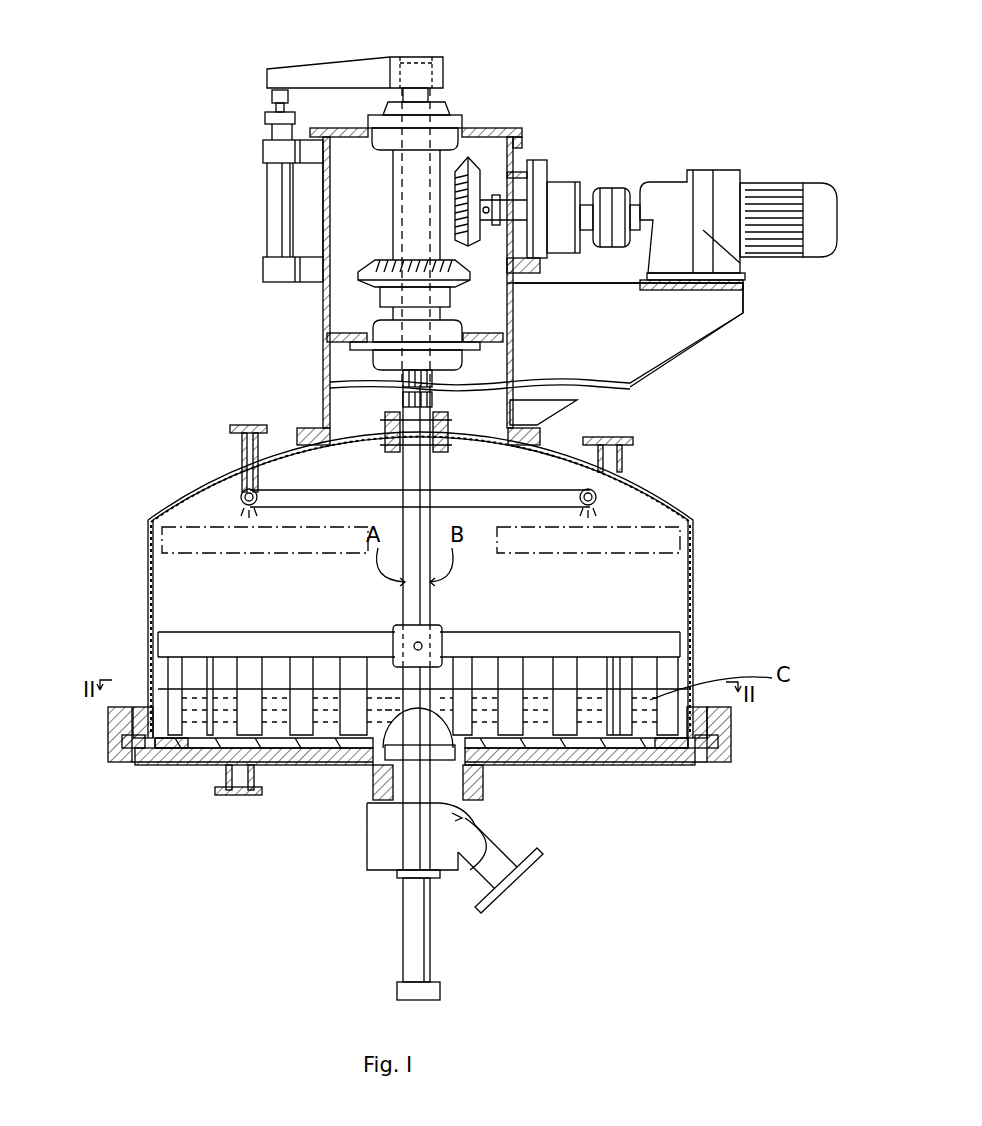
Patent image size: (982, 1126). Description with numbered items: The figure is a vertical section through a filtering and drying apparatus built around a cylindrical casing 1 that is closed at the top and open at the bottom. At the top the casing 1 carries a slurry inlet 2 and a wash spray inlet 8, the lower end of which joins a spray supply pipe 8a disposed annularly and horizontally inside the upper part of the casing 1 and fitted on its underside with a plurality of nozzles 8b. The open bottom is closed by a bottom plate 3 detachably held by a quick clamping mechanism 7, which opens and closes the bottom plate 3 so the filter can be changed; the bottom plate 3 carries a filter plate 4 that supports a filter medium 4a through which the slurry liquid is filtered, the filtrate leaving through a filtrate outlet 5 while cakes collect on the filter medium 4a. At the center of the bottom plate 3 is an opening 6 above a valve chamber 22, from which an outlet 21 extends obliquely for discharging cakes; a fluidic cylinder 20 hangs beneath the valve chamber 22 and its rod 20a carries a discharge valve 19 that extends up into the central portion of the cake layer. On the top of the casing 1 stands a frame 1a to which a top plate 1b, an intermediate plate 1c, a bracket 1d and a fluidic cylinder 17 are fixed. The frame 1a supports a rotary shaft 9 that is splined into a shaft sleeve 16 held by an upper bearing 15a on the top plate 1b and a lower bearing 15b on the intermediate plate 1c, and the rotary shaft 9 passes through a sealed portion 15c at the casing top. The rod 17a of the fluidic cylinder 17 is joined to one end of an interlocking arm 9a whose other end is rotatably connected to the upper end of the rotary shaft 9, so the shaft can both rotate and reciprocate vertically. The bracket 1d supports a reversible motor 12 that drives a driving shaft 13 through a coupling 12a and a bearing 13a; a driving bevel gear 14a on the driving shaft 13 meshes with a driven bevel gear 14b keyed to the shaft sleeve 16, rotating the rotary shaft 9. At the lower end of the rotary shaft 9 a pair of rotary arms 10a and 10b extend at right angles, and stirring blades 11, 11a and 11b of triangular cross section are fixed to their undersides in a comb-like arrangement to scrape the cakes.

The cylindrical casing 1 is at (693, 560).
The frame 1a is at (327, 345).
The top plate 1b is at (495, 130).
The intermediate plate 1c is at (327, 337).
The bracket 1d is at (705, 330).
The slurry inlet 2 is at (633, 440).
The bottom plate 3 is at (690, 760).
The filter plate 4 is at (645, 765).
The filter medium 4a is at (622, 765).
The filtrate outlet 5 is at (233, 797).
The opening 6 is at (400, 805).
The quick clamping mechanism 7 is at (118, 738).
The wash spray inlet 8 is at (243, 425).
The spray supply pipe 8a is at (352, 490).
The nozzles 8b is at (240, 505).
The rotary shaft 9 is at (432, 583).
The interlocking arm 9a is at (352, 65).
The rotary arm 10a is at (690, 509).
The rotary arm 10b is at (170, 523).
The stirring blade 11 is at (200, 765).
The stirring blade 11a is at (680, 762).
The stirring blade 11b is at (190, 765).
The reversible motor 12 is at (720, 185).
The coupling 12a is at (632, 205).
The driving shaft 13 is at (530, 170).
The bearing 13a is at (562, 185).
The driving bevel gear 14a is at (458, 228).
The driven bevel gear 14b is at (390, 262).
The upper bearing 15a is at (428, 122).
The lower bearing 15b is at (375, 366).
The sealed portion 15c is at (545, 407).
The shaft sleeve 16 is at (396, 175).
The fluidic cylinder 17 is at (270, 215).
The rod 17a is at (274, 104).
The discharge valve 19 is at (385, 812).
The fluidic cylinder 20 is at (430, 968).
The rod 20a is at (397, 876).
The outlet 21 is at (505, 870).
The valve chamber 22 is at (485, 830).